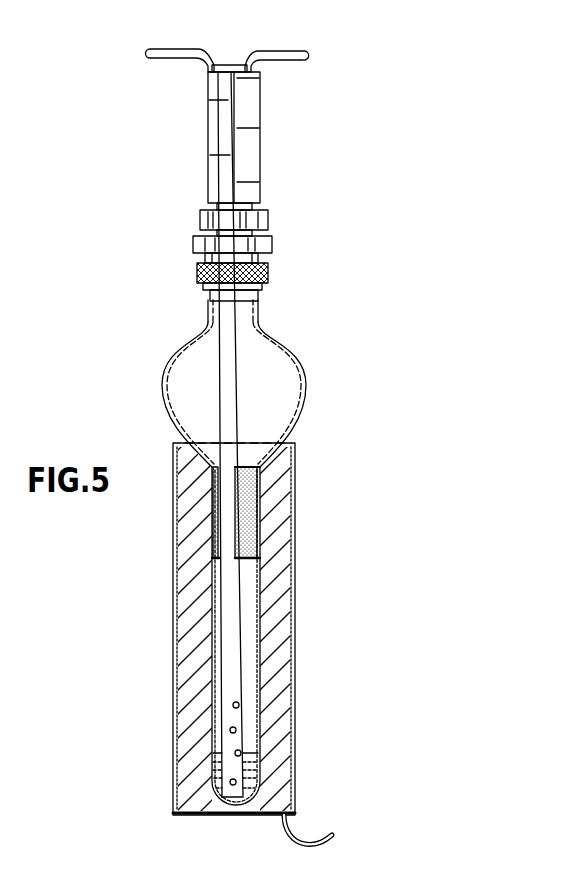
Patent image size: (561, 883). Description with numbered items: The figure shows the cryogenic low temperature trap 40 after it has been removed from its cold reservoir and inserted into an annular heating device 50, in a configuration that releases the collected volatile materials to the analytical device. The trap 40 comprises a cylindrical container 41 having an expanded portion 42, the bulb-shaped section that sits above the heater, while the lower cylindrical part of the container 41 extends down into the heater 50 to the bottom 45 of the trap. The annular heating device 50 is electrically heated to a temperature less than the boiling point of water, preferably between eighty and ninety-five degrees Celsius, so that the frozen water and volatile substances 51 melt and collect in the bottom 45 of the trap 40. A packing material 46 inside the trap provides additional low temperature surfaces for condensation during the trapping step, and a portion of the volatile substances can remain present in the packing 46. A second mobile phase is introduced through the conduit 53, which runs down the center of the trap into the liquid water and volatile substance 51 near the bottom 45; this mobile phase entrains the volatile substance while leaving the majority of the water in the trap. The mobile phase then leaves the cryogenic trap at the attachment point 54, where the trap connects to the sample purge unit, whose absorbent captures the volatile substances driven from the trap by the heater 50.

The low temperature trap 40 is at (256, 375).
The cylindrical container 41 is at (257, 309).
The expanded portion 42 is at (298, 360).
The bottom of the trap 45 is at (233, 810).
The packing material 46 is at (246, 520).
The annular heating device 50 is at (257, 637).
The water and volatile substances 51 is at (252, 778).
The conduit 53 is at (180, 47).
The attachment point 54 is at (299, 50).